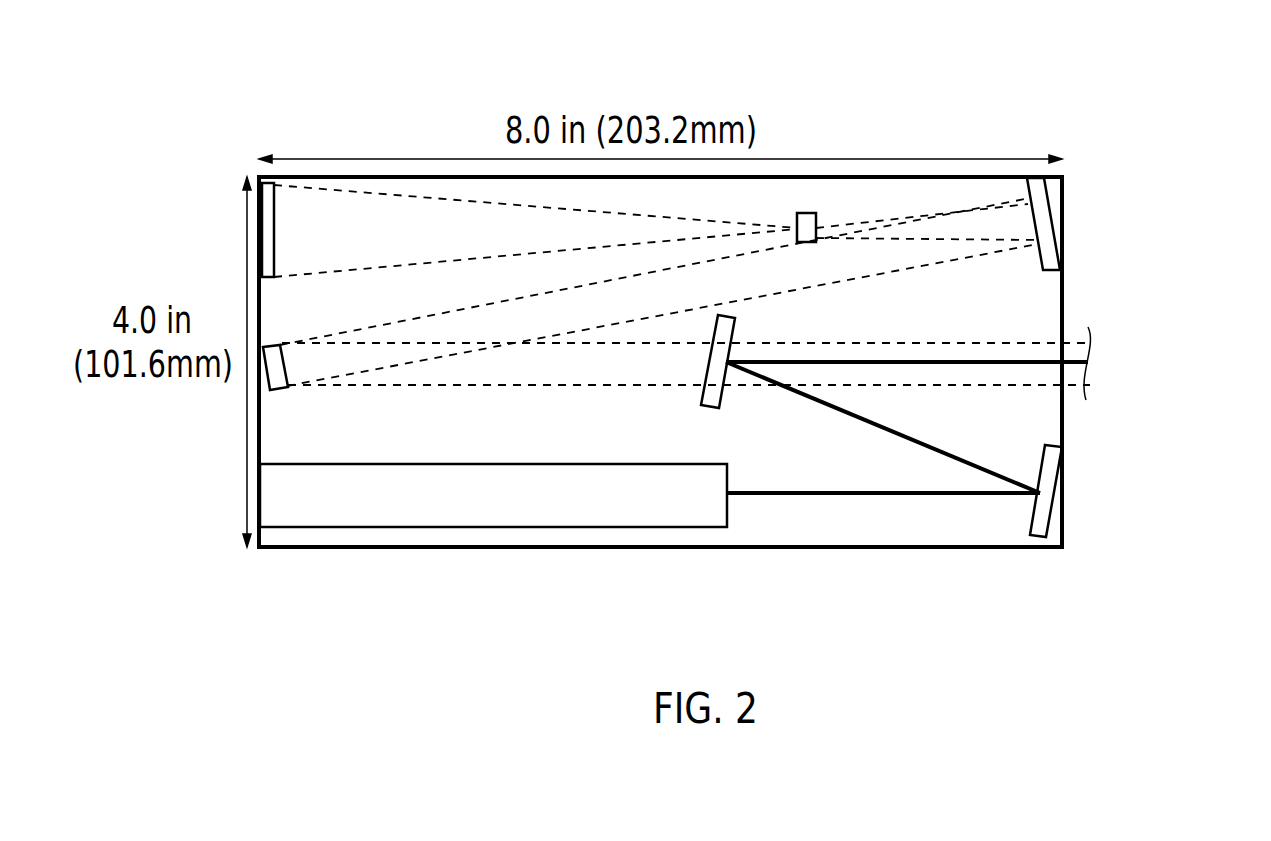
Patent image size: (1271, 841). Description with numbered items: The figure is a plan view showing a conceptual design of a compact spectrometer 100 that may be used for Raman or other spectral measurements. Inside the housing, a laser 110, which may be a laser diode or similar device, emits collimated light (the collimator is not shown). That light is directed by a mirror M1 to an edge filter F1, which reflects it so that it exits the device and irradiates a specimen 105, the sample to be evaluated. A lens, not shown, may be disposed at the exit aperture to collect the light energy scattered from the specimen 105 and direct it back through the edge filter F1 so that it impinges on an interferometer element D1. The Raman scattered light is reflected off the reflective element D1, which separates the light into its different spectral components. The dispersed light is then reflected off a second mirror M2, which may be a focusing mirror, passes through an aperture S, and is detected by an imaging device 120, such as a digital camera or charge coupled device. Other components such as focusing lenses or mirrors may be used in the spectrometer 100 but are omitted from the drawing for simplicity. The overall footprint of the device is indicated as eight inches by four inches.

The spectrometer 100 is at (1064, 75).
The specimen 105 is at (1176, 390).
The laser 110 is at (389, 463).
The imaging device 120 is at (278, 238).
The interferometer element D1 is at (268, 344).
The aperture S is at (808, 213).
The edge filter F1 is at (735, 332).
The mirror M1 is at (1035, 508).
The mirror M2 is at (1043, 258).